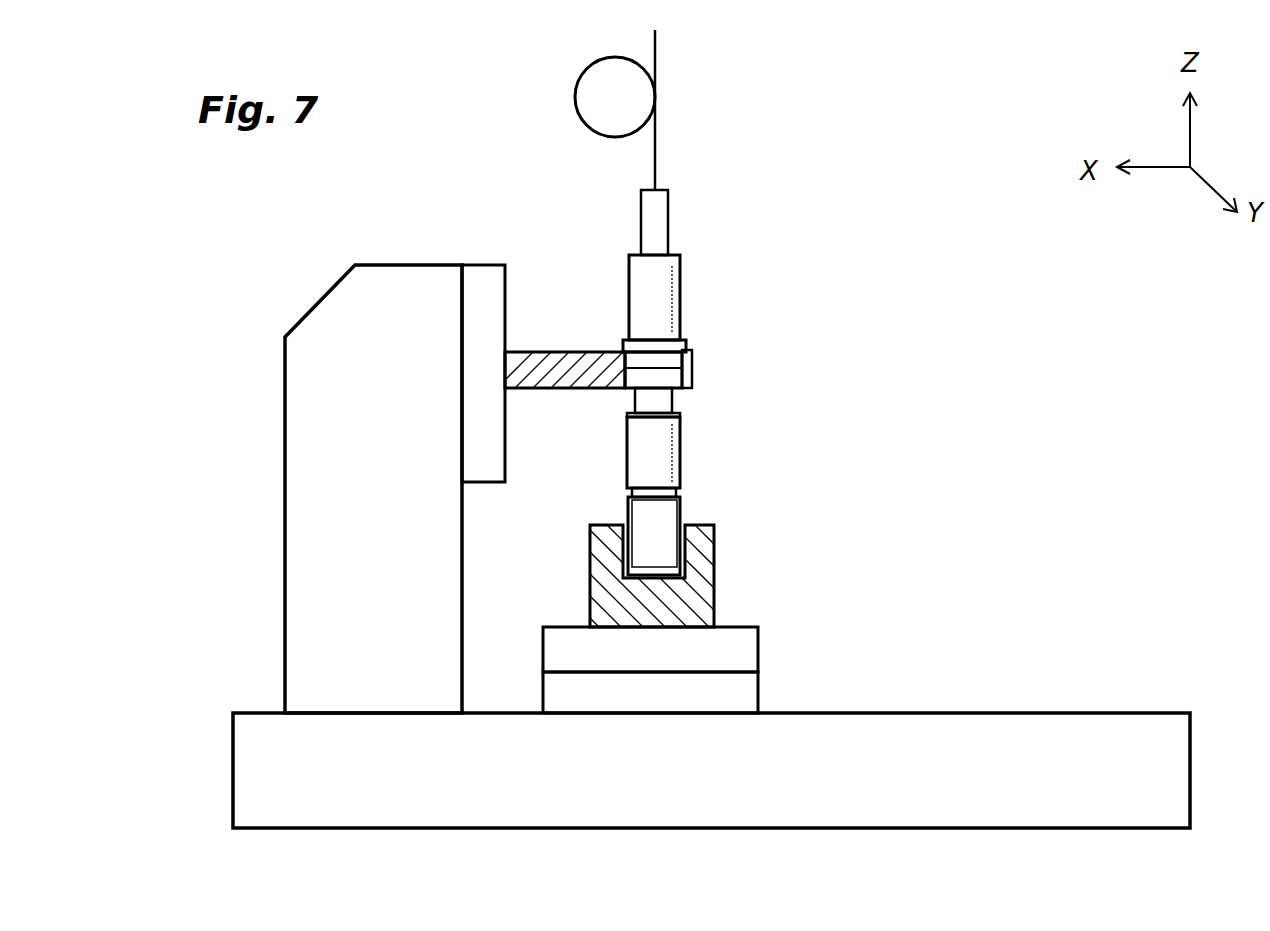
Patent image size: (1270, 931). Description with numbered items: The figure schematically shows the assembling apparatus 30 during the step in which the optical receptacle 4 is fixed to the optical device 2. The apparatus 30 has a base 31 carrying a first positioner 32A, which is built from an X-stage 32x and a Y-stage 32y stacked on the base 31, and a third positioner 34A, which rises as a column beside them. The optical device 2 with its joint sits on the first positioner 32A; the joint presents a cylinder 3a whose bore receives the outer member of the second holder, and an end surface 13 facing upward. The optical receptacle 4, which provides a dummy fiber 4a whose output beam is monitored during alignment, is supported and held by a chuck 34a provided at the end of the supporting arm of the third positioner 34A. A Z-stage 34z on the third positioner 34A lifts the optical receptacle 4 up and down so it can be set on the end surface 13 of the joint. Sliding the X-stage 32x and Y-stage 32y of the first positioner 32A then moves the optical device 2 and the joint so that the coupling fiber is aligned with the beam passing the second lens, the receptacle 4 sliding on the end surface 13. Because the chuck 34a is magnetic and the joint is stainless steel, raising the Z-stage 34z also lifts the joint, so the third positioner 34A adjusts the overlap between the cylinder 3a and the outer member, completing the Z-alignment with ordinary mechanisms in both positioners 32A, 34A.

The apparatus 30 is at (858, 192).
The dummy fiber 4a is at (658, 100).
The optical receptacle 4 is at (681, 304).
The chuck 34a is at (693, 356).
The end surface 13 is at (676, 412).
The cylinder 3a is at (652, 447).
The optical device 2 is at (672, 512).
The first positioner 32A is at (566, 575).
The X-stage 32x is at (758, 652).
The Y-stage 32y is at (758, 690).
The base 31 is at (1190, 770).
The third positioner 34A is at (262, 478).
The Z-stage 34z is at (485, 262).